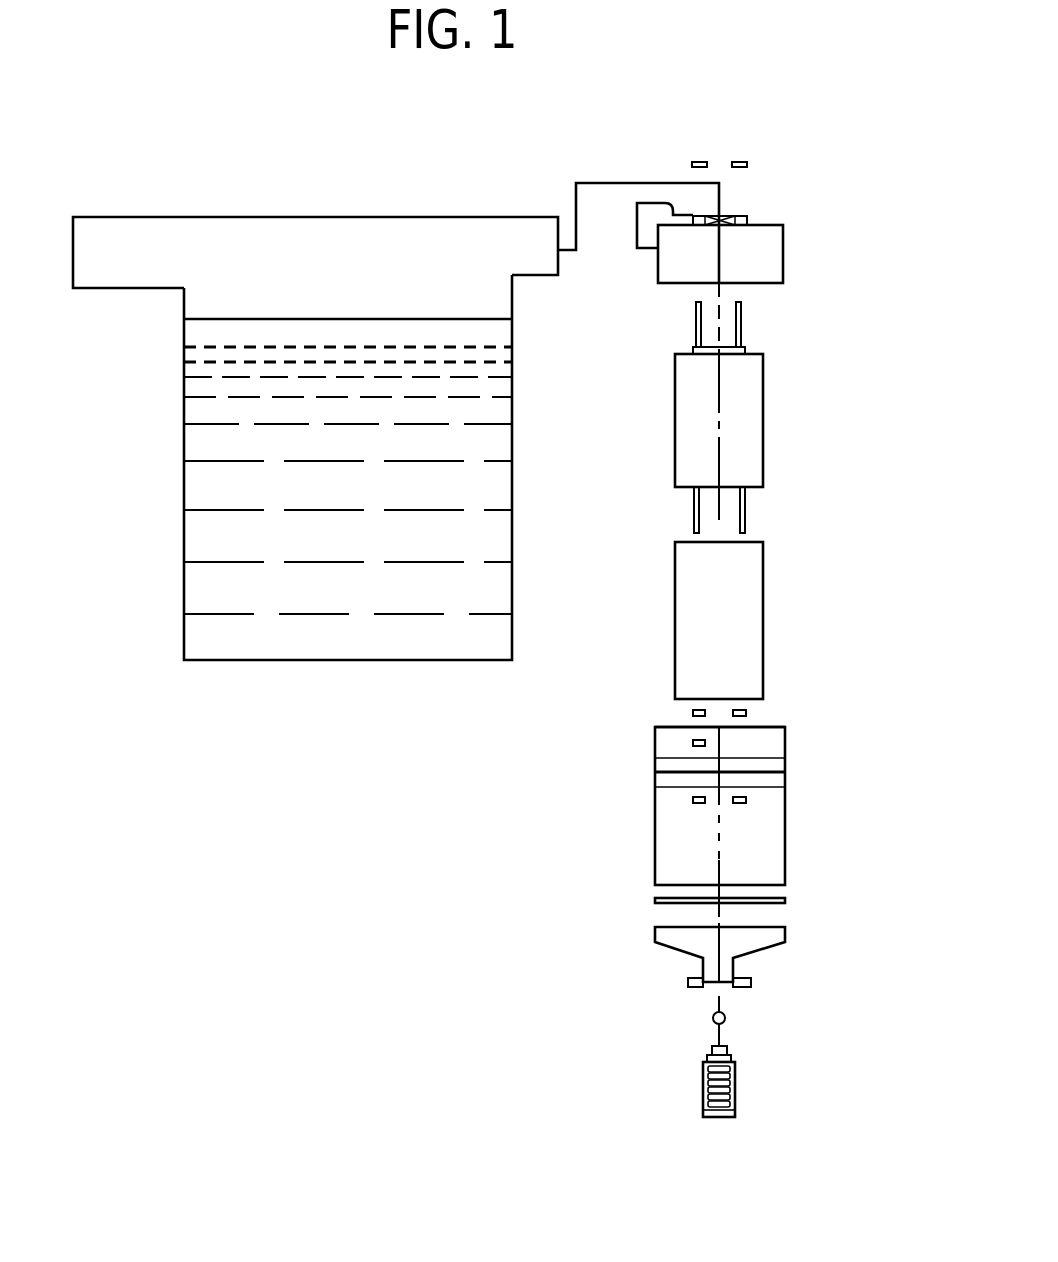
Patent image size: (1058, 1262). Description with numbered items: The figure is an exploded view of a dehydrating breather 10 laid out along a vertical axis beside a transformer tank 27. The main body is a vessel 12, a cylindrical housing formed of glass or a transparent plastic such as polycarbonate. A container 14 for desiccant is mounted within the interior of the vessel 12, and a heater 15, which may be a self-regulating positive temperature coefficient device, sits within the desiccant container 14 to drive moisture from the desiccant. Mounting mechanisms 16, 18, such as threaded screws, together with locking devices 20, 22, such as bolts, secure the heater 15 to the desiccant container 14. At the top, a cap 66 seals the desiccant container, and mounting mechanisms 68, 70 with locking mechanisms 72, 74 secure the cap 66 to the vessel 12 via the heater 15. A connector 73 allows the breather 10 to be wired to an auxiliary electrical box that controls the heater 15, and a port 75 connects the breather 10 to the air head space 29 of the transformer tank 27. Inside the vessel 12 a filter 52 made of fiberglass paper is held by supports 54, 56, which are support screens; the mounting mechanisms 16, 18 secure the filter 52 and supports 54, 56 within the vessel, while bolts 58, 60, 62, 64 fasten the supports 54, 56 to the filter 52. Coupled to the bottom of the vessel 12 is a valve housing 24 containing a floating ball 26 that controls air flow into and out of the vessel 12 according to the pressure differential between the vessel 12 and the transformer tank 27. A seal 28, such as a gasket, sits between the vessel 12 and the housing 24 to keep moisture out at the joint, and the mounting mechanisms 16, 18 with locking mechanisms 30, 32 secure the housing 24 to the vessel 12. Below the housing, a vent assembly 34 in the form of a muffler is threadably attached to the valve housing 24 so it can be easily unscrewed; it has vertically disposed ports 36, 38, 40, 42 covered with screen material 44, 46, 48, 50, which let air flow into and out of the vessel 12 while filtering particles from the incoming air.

The dehydrating breather 10 is at (840, 88).
The vessel 12 is at (655, 863).
The container 14 is at (675, 627).
The heater 15 is at (763, 420).
The mounting mechanism 16 is at (695, 513).
The mounting mechanism 18 is at (744, 512).
The locking device 20 is at (692, 713).
The locking device 22 is at (747, 713).
The valve housing 24 is at (785, 930).
The floating ball 26 is at (725, 1018).
The transformer tank 27 is at (372, 684).
The seal 28 is at (790, 897).
The air head space 29 is at (230, 277).
The locking mechanism 30 is at (687, 980).
The locking mechanism 32 is at (752, 980).
The vent assembly 34 is at (735, 1092).
The port 36 is at (703, 1110).
The port 38 is at (703, 1091).
The port 40 is at (702, 1078).
The port 42 is at (703, 1065).
The screen material 44 is at (735, 1110).
The screen material 46 is at (735, 1097).
The screen material 48 is at (735, 1080).
The screen material 50 is at (737, 1063).
The filter 52 is at (787, 768).
The support 54 is at (655, 787).
The support 56 is at (787, 750).
The bolt 58 is at (692, 800).
The bolt 60 is at (747, 800).
The bolt 62 is at (692, 743).
The bolt 64 is at (787, 742).
The cap 66 is at (658, 285).
The mounting mechanism 68 is at (743, 330).
The mounting mechanism 70 is at (693, 330).
The locking mechanism 72 is at (747, 163).
The connector 73 is at (643, 212).
The locking mechanism 74 is at (692, 163).
The port 75 is at (747, 217).